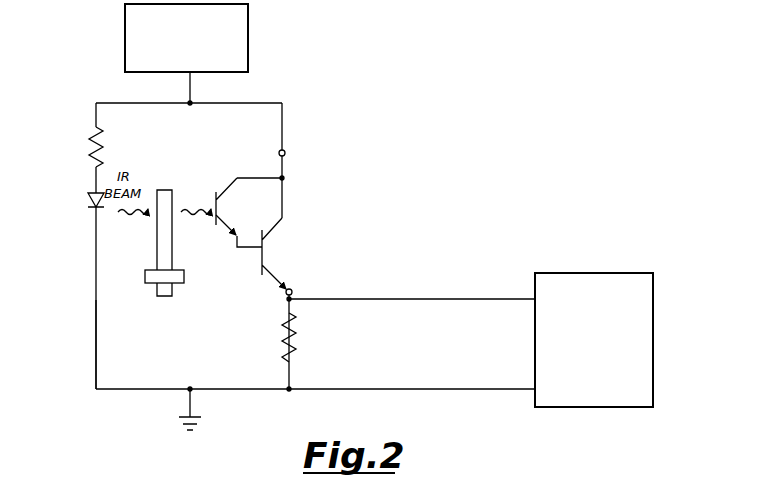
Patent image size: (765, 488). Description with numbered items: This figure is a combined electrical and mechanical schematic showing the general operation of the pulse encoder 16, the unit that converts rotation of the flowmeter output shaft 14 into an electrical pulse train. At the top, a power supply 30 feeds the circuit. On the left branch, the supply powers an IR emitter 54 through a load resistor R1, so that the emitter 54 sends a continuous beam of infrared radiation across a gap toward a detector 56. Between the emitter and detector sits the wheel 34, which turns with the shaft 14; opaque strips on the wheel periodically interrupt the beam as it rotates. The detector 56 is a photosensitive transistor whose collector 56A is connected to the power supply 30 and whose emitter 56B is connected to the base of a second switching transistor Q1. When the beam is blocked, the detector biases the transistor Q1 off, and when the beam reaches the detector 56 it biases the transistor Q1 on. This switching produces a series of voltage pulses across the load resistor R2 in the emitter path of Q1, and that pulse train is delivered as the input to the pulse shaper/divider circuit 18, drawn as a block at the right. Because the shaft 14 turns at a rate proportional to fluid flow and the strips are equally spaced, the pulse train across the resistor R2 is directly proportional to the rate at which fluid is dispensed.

The power supply 30 is at (248, 49).
The load resistor R1 is at (91, 150).
The IR emitter 54 is at (88, 200).
The pulse encoder 16 is at (96, 342).
The wheel 34 is at (165, 190).
The output shaft 14 is at (151, 283).
The detector 56 is at (234, 213).
The collector 56A is at (228, 187).
The emitter 56B is at (225, 227).
The switching transistor Q1 is at (279, 256).
The load resistor R2 is at (285, 338).
The pulse shaper/divider circuit 18 is at (653, 333).